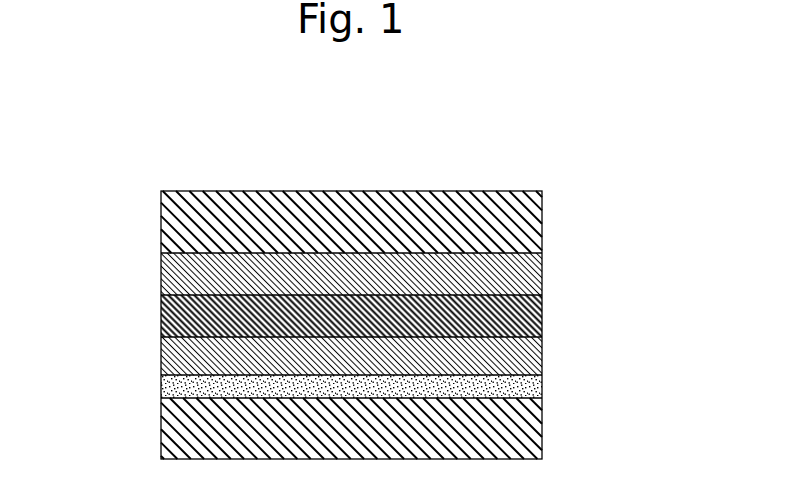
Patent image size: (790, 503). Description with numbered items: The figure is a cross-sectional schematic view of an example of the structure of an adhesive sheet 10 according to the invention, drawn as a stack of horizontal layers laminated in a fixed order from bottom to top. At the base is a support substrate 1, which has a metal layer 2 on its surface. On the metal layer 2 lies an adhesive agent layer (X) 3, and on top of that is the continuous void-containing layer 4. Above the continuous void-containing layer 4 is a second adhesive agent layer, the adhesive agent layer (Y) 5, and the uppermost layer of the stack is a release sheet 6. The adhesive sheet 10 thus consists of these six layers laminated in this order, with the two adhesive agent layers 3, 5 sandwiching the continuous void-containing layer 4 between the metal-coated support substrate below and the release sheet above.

The adhesive sheet 10 is at (518, 150).
The release sheet 6 is at (515, 225).
The adhesive agent layer (Y) 5 is at (190, 268).
The continuous void-containing layer 4 is at (512, 313).
The adhesive agent layer (X) 3 is at (190, 351).
The metal layer 2 is at (510, 388).
The support substrate 1 is at (513, 432).